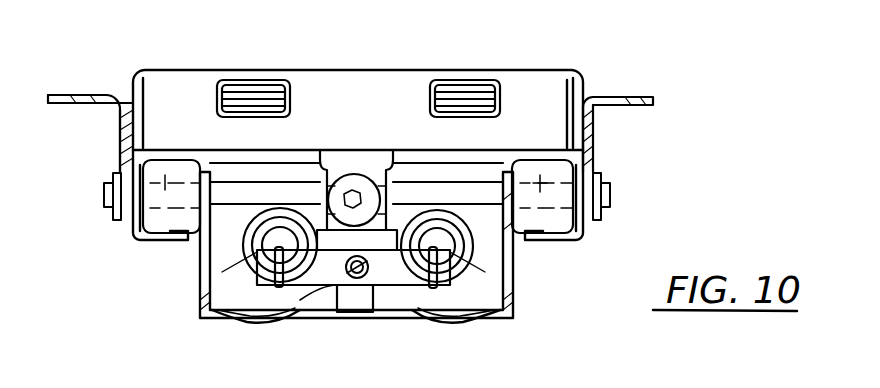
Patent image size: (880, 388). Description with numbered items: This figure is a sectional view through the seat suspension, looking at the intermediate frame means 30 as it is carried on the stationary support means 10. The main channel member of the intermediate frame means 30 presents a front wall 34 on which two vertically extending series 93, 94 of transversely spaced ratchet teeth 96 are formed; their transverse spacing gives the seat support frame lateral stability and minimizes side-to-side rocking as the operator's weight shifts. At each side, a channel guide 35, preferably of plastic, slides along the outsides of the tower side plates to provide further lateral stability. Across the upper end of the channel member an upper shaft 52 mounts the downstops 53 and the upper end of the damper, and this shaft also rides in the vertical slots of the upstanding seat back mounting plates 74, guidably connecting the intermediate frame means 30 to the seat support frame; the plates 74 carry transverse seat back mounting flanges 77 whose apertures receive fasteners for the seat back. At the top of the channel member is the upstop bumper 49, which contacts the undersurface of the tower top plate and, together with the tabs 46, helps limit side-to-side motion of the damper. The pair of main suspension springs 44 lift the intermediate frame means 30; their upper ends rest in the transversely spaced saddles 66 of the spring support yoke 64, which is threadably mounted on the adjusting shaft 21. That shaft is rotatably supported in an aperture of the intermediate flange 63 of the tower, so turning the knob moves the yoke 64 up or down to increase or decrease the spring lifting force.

The stationary support means 10 is at (516, 312).
The adjusting shaft 21 is at (357, 280).
The intermediate frame means 30 is at (568, 68).
The front wall 34 is at (362, 122).
The channel guide 35 is at (170, 247).
The main suspension springs 44 is at (270, 262).
The tabs 46 is at (398, 181).
The upstop bumper 49 is at (353, 176).
The upper shaft 52 is at (103, 200).
The downstops 53 is at (167, 213).
The intermediate flange 63 is at (333, 298).
The spring support yoke 64 is at (378, 286).
The saddles 66 is at (262, 284).
The seat back mounting plates 74 is at (119, 127).
The seat back mounting flanges 77 is at (62, 93).
The vertically extending series of ratchet teeth 93 is at (470, 78).
The vertically extending series of ratchet teeth 94 is at (230, 83).
The ratchet teeth 96 is at (253, 92).